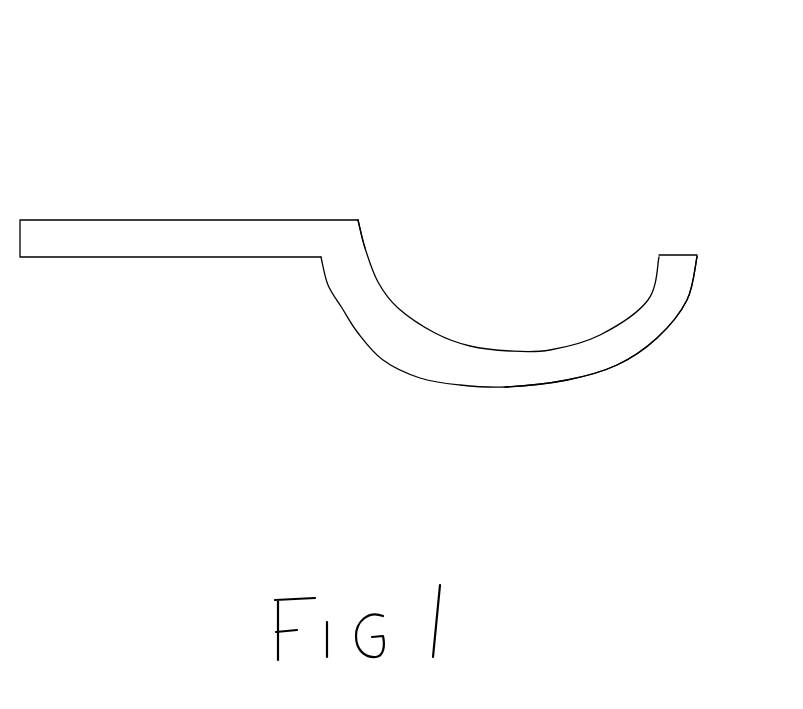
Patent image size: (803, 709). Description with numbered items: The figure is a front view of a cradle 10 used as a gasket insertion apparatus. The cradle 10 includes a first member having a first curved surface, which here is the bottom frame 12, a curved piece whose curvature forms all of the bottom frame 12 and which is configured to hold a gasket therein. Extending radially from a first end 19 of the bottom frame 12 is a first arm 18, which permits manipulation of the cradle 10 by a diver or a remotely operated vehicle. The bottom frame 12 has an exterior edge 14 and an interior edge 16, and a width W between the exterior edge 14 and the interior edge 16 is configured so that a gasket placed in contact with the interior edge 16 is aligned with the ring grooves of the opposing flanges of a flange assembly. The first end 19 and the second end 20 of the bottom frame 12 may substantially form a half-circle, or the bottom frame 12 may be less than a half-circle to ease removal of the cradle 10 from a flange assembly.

The cradle 10 is at (667, 70).
The bottom frame 12 is at (417, 355).
The exterior edge 14 is at (618, 362).
The interior edge 16 is at (450, 342).
The first arm 18 is at (146, 240).
The first end 19 is at (336, 233).
The second end 20 is at (680, 252).
The width W is at (510, 352).